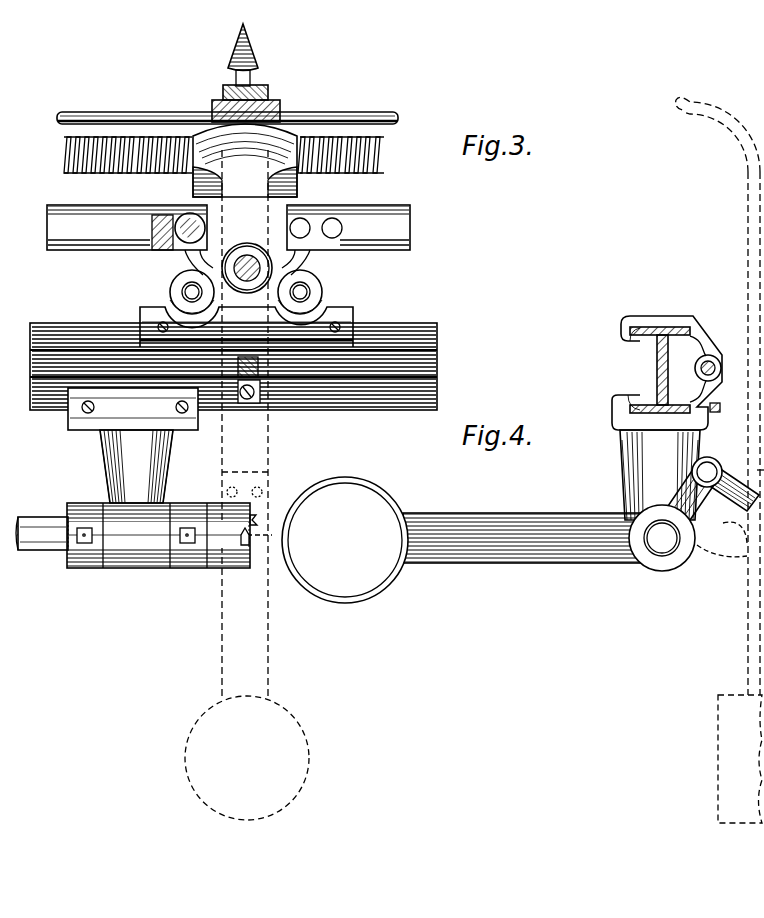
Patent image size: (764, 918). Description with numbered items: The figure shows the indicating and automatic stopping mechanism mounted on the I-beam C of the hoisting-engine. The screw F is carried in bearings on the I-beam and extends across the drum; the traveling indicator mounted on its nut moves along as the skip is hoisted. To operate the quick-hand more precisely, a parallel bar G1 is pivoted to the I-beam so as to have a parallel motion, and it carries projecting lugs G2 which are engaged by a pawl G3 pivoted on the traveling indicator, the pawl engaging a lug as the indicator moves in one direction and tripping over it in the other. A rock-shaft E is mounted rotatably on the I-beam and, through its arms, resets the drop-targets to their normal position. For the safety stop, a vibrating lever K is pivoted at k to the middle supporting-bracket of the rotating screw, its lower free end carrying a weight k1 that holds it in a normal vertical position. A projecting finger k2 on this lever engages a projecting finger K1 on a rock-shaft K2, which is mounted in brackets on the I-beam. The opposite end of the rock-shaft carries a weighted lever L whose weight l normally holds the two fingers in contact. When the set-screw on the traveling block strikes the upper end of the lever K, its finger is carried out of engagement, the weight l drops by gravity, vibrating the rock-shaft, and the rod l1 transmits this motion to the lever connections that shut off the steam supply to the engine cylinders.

In FIG. 3, the pawl G3 is at (254, 64).
In FIG. 3, the vibrating lever K is at (223, 90).
In FIG. 4, the vibrating lever K is at (748, 178).
In FIG. 3, the projecting lug G2 is at (128, 115).
In FIG. 3, the screw F is at (90, 140).
In FIG. 3, the parallel bar G1 is at (140, 226).
In FIG. 3, the pivot k is at (262, 268).
In FIG. 3, the I-beam C is at (80, 333).
In FIG. 4, the I-beam C is at (655, 360).
In FIG. 3, the rock-shaft E is at (358, 372).
In FIG. 4, the rock-shaft E is at (712, 358).
In FIG. 3, the rock-shaft K2 is at (43, 527).
In FIG. 4, the rock-shaft K2 is at (660, 545).
In FIG. 3, the projecting finger k2 is at (240, 533).
In FIG. 3, the projecting finger K1 is at (245, 545).
In FIG. 3, the weight k1 is at (302, 770).
In FIG. 4, the weight k1 is at (718, 762).
In FIG. 4, the weight l is at (345, 540).
In FIG. 4, the weighted lever L is at (528, 530).
In FIG. 4, the rod l1 is at (725, 470).